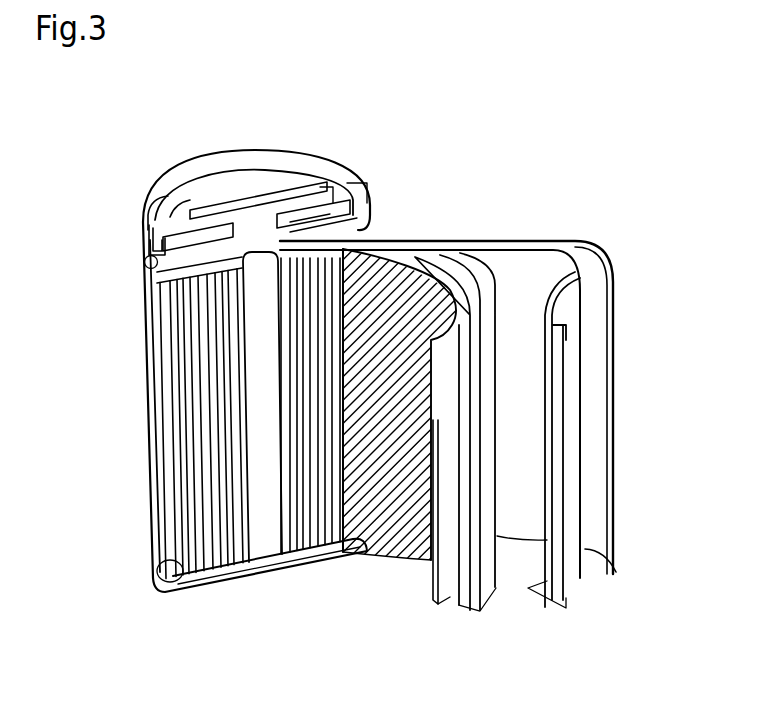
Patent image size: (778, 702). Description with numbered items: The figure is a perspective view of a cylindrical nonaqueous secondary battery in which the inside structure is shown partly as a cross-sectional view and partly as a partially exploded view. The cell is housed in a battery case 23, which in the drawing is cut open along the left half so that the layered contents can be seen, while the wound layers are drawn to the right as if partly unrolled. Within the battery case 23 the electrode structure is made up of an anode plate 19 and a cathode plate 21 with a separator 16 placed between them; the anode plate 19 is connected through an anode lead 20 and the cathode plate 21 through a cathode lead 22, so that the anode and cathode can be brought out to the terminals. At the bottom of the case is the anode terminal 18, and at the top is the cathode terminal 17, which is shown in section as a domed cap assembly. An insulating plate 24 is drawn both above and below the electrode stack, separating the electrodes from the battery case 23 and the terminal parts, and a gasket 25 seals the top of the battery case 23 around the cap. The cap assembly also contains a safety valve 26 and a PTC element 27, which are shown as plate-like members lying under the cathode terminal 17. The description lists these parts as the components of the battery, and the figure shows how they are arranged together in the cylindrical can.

The separator 16 is at (492, 250).
The cathode terminal 17 is at (218, 193).
The anode terminal 18 is at (213, 588).
The anode plate 19 is at (573, 377).
The anode lead 20 is at (563, 494).
The cathode plate 21 is at (455, 592).
The cathode lead 22 is at (362, 235).
The battery case 23 is at (147, 413).
The insulating plate 24 is at (150, 278).
The gasket 25 is at (147, 188).
The safety valve 26 is at (249, 220).
The PTC element 27 is at (310, 173).